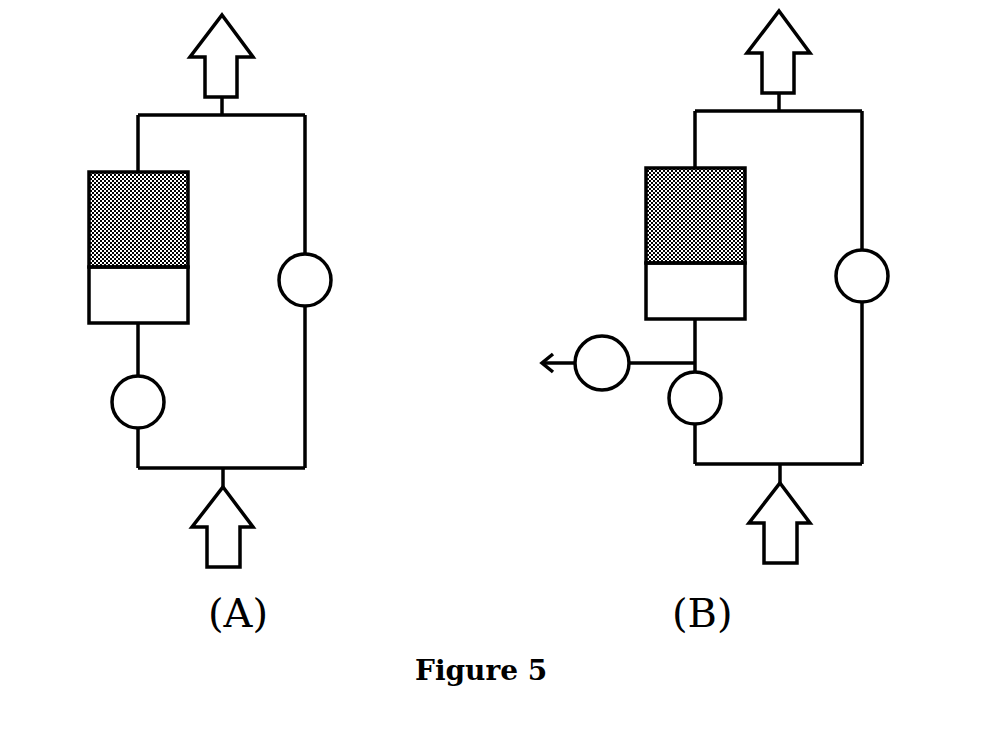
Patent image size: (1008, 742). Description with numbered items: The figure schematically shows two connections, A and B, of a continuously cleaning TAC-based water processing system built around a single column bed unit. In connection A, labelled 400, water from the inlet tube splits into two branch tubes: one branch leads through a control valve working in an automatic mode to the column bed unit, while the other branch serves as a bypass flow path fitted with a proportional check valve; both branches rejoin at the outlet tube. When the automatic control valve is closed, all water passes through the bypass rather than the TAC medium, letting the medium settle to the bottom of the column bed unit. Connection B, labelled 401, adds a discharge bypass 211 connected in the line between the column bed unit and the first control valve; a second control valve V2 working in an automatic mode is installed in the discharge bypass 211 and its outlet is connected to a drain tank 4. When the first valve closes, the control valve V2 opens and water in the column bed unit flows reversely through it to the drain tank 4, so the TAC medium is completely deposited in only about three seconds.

The system (A) 400 is at (193, 291).
The system (B) 401 is at (703, 287).
The drain tank 4 is at (560, 366).
The discharge bypass 211 is at (648, 353).
The control valve V2 is at (602, 363).